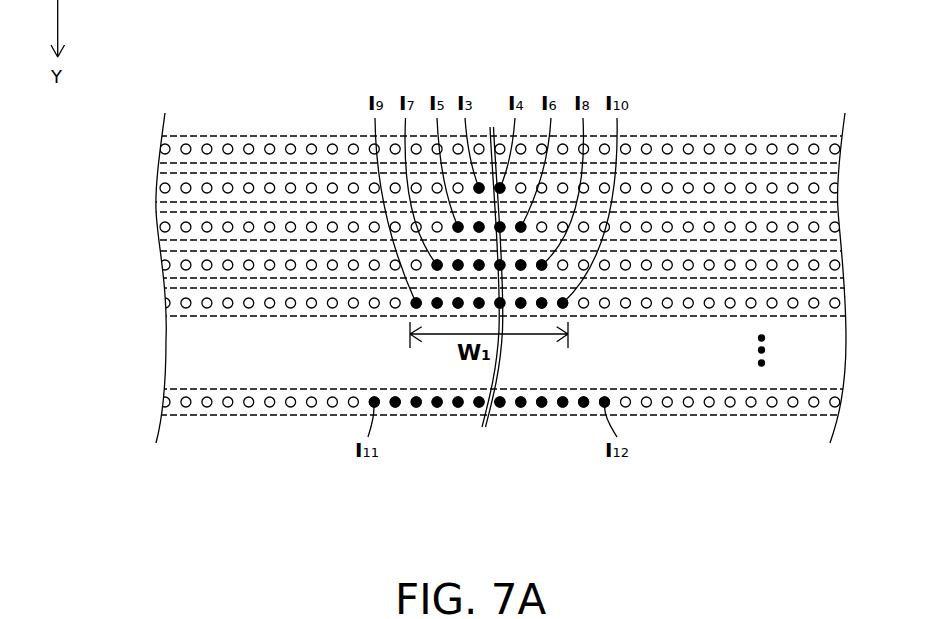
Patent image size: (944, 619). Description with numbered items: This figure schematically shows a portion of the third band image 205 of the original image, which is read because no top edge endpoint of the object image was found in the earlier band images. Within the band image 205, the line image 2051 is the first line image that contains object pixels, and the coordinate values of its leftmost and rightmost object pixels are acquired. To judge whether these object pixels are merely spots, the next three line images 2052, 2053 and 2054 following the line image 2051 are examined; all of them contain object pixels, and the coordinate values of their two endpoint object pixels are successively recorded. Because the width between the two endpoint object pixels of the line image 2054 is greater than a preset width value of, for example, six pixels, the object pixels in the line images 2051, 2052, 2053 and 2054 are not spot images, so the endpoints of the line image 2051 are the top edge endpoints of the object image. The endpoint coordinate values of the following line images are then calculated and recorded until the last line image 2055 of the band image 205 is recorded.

The band image 205 is at (682, 91).
The line image 2051 is at (213, 174).
The line image 2052 is at (213, 213).
The line image 2053 is at (214, 252).
The line image 2054 is at (214, 289).
The last line image 2055 is at (222, 389).